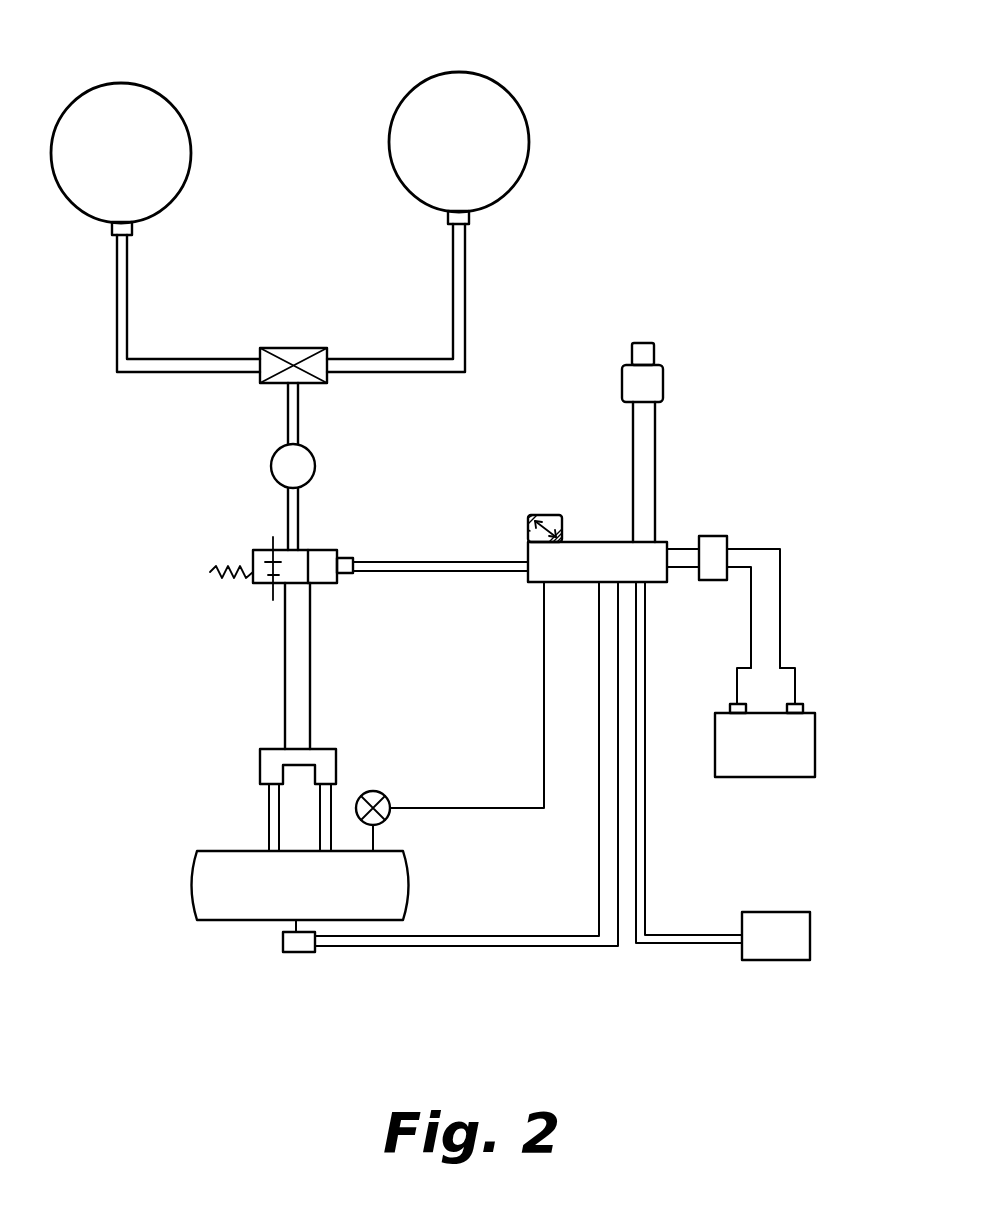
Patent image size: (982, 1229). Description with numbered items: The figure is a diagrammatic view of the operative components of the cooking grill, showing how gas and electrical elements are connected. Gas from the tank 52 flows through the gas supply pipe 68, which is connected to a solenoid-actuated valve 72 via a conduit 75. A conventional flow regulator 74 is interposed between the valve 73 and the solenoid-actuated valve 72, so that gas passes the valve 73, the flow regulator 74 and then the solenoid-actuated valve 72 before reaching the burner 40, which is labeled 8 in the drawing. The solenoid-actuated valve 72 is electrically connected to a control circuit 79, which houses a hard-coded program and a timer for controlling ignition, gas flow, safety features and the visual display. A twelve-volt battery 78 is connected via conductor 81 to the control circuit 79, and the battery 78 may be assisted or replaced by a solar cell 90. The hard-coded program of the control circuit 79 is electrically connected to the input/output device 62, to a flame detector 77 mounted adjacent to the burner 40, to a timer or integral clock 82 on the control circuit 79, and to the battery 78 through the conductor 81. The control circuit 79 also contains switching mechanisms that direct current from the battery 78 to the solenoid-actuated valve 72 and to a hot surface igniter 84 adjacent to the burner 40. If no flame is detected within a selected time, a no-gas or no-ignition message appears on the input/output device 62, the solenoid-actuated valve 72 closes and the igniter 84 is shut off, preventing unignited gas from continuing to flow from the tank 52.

The tank 52 is at (155, 90).
The conduit 75 is at (128, 332).
The valve 73 is at (278, 348).
The flow regulator 74 is at (315, 463).
The solenoid-actuated valve 72 is at (335, 550).
The gas supply pipe 68 is at (327, 747).
The burner 40 is at (279, 929).
The tank 8 is at (298, 883).
The flame detector 77 is at (387, 800).
The hot surface igniter 84 is at (300, 953).
The control circuit 79 is at (645, 585).
The timer or integral clock 82 is at (547, 515).
The input/output device 62 is at (665, 390).
The conductor 81 is at (780, 590).
The 12-volt battery 78 is at (777, 777).
The solar cell 90 is at (777, 960).